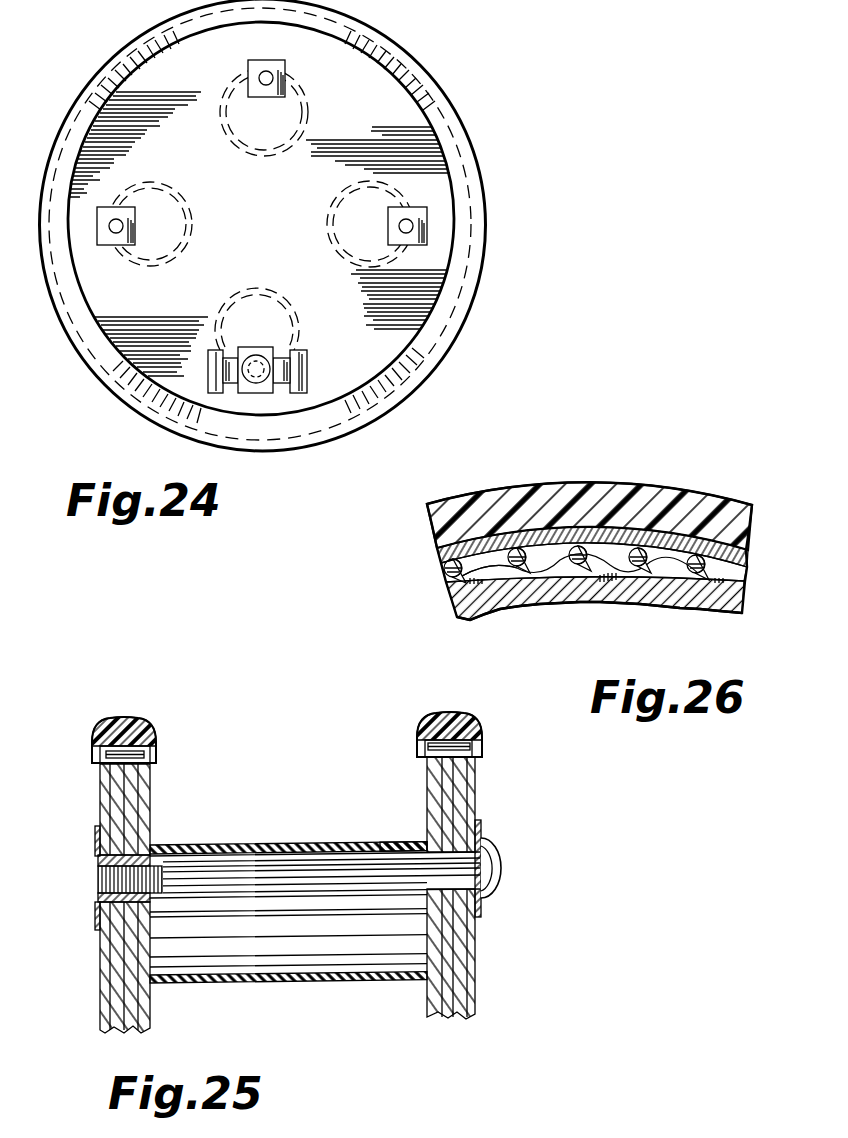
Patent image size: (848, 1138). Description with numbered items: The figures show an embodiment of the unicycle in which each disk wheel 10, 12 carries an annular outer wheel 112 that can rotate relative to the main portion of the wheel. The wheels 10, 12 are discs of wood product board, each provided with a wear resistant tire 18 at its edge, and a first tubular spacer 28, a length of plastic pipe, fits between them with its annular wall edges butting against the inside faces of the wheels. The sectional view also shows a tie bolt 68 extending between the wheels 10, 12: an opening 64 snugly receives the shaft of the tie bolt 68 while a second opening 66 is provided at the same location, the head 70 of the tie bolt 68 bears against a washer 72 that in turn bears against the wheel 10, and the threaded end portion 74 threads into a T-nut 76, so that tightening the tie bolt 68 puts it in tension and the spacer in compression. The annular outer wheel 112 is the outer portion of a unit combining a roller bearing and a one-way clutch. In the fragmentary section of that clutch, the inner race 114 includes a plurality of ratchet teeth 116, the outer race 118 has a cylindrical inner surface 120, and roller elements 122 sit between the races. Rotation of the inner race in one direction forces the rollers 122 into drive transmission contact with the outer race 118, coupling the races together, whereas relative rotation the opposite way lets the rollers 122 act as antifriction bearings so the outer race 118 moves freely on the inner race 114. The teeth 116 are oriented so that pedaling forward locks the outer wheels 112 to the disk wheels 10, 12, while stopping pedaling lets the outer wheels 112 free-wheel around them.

In FIG. 24, the wheel 10 is at (148, 372).
In FIG. 26, the wheel 10 is at (602, 603).
In FIG. 25, the wheel 10 is at (152, 803).
In FIG. 25, the wheel 12 is at (460, 790).
In FIG. 24, the wear resistant tire 18 is at (84, 108).
In FIG. 26, the wear resistant tire 18 is at (575, 490).
In FIG. 25, the wear resistant tire 18 is at (118, 719).
In FIG. 25, the first tubular spacer 28 is at (250, 845).
In FIG. 25, the opening 64 is at (392, 845).
In FIG. 25, the opening 66 is at (127, 902).
In FIG. 25, the tie bolt 68 is at (263, 880).
In FIG. 25, the head 70 is at (501, 862).
In FIG. 25, the washer 72 is at (482, 908).
In FIG. 25, the threaded end portion 74 is at (100, 880).
In FIG. 25, the T-nut 76 is at (96, 840).
In FIG. 24, the annular outer wheel 112 is at (93, 340).
In FIG. 26, the annular outer wheel 112 is at (497, 500).
In FIG. 25, the annular outer wheel 112 is at (153, 740).
In FIG. 26, the inner race 114 is at (490, 598).
In FIG. 26, the ratchet teeth 116 is at (667, 562).
In FIG. 26, the outer race 118 is at (640, 530).
In FIG. 26, the cylindrical inner surface 120 is at (492, 576).
In FIG. 26, the roller elements 122 is at (521, 566).
In FIG. 25, the roller elements 122 is at (130, 760).